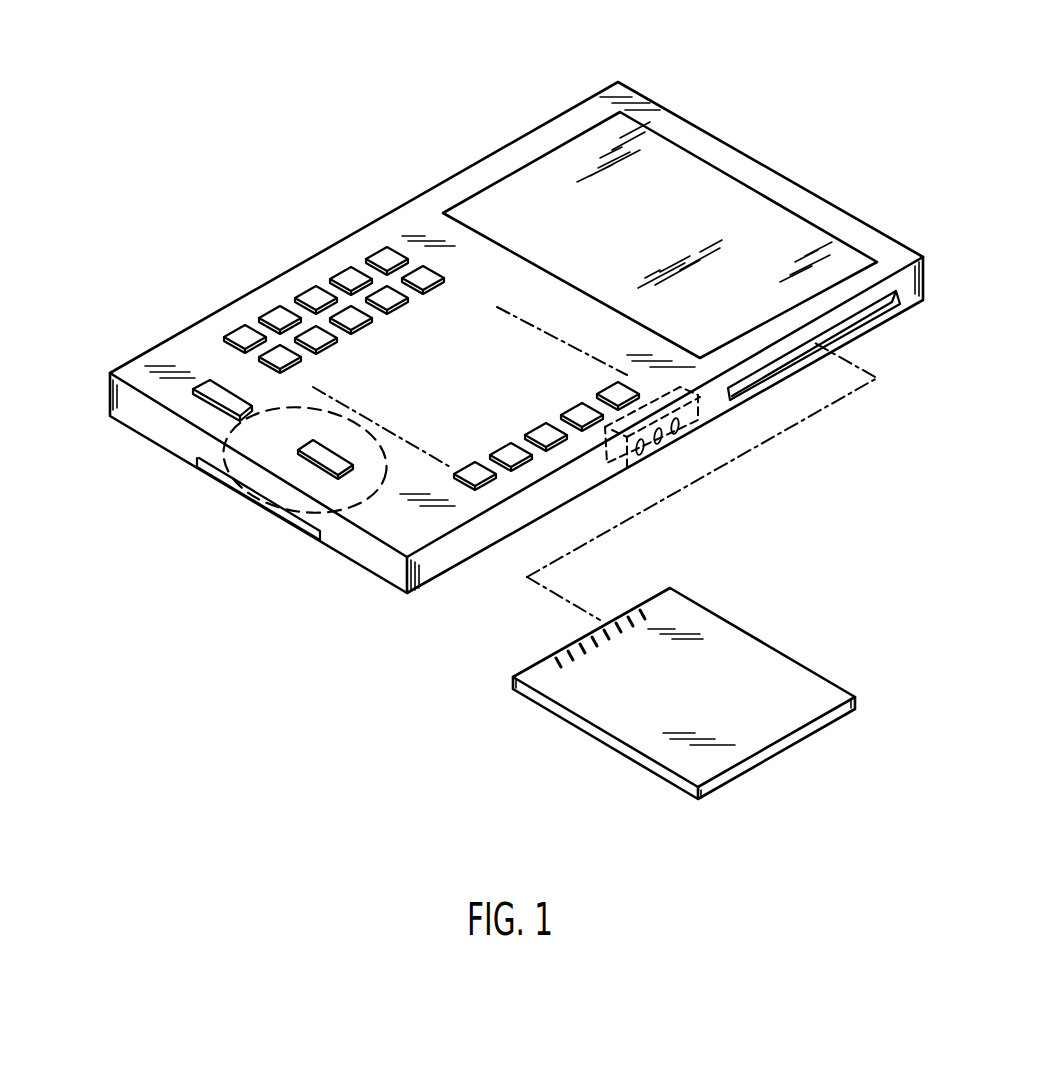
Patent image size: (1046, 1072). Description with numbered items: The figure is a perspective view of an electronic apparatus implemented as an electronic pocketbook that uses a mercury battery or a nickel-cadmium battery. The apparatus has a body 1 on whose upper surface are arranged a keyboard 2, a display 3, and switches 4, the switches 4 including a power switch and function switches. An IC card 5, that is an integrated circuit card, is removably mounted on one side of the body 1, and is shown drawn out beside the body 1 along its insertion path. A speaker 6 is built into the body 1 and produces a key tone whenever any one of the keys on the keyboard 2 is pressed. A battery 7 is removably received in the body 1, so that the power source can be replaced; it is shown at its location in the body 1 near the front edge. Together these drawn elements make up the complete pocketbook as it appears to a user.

The body 1 is at (560, 109).
The keyboard 2 is at (350, 270).
The display 3 is at (518, 185).
The switches 4 is at (210, 380).
The IC card 5 is at (733, 632).
The speaker 6 is at (667, 440).
The battery 7 is at (240, 493).